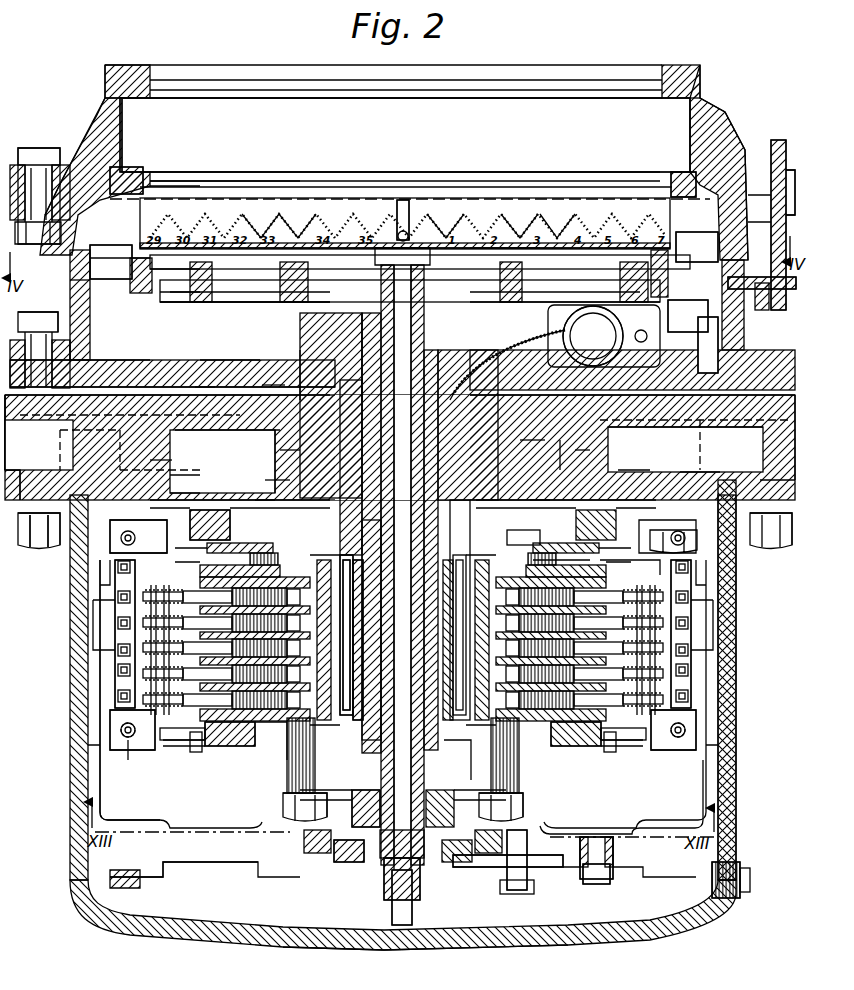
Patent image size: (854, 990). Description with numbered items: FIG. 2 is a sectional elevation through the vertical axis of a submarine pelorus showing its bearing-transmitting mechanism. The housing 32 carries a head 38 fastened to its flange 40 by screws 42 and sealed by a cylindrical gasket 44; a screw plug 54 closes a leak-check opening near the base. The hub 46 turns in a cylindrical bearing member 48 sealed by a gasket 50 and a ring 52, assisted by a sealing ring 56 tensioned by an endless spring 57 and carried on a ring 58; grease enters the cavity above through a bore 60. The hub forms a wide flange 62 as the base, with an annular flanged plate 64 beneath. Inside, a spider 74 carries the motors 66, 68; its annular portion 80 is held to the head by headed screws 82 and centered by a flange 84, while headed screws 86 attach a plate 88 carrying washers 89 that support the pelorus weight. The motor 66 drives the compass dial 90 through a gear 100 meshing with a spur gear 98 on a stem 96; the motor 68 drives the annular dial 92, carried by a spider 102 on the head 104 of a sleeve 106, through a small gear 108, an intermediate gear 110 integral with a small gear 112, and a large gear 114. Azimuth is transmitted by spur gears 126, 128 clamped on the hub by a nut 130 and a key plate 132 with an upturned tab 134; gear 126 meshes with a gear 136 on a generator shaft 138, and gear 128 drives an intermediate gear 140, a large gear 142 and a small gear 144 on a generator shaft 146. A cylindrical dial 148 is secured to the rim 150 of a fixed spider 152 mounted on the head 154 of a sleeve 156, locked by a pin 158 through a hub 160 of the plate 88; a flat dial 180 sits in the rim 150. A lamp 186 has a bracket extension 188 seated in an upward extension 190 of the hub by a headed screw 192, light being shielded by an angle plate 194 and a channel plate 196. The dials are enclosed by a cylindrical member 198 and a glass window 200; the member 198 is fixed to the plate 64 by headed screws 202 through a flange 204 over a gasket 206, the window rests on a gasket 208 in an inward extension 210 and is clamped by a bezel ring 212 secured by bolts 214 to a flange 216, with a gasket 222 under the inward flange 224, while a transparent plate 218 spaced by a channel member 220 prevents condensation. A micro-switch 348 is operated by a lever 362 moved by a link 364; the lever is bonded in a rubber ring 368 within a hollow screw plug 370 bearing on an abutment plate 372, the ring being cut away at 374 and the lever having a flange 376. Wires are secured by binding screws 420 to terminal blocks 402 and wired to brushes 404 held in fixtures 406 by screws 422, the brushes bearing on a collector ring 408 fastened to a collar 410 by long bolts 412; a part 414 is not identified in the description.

The housing 32 is at (500, 948).
The head 38 is at (152, 385).
The outwardly extending flange 40 is at (22, 548).
The screws 42 is at (48, 548).
The cylindrical gasket 44 is at (80, 500).
The hub 46 is at (300, 352).
The cylindrical member 48 is at (292, 456).
The gasket 50 is at (540, 450).
The ring 52 is at (578, 442).
The screw plug 54 is at (745, 879).
The sealing ring 56 is at (275, 448).
The endless tension spring 57 is at (250, 432).
The complementally shaped ring 58 is at (585, 453).
The bore 60 is at (205, 385).
The wide flange 62 is at (226, 368).
The annular flanged plate 64 is at (270, 385).
The motor 66 is at (165, 690).
The motor 68 is at (621, 797).
The spider 74 is at (135, 760).
The annular portion 80 is at (130, 485).
The headed screw 82 is at (158, 458).
The upwardly extending flange 84 is at (185, 474).
The headed screws 86 is at (302, 820).
The plate 88 is at (262, 780).
The washers 89 is at (455, 762).
The compass dial 90 is at (300, 248).
The annular dial 92 is at (210, 247).
The stem 96 is at (416, 242).
The spur gear 98 is at (428, 892).
The gear 100 is at (175, 884).
The spider 102 is at (262, 248).
The head of sleeve 104 is at (346, 248).
The sleeve 106 is at (455, 248).
The small gear 108 is at (616, 855).
The large intermediate gear 110 is at (592, 884).
The small gear 112 is at (530, 885).
The large gear 114 is at (486, 870).
The spur gear 126 is at (500, 512).
The spur gear 128 is at (272, 482).
The clamping nut 130 is at (352, 543).
The annular plate 132 is at (360, 531).
The upturned tab 134 is at (242, 540).
The gear 136 is at (118, 557).
The shaft 138 is at (188, 482).
The small intermediate gear 140 is at (630, 466).
The large gear 142 is at (536, 548).
The small gear 144 is at (650, 562).
The shaft 146 is at (660, 576).
The cylindrical dial 148 is at (566, 215).
The flange 150 is at (158, 291).
The fixed spider 152 is at (184, 300).
The head of sleeve 154 is at (264, 305).
The sleeve 156 is at (378, 375).
The pin 158 is at (360, 845).
The downwardly projecting hub 160 is at (358, 800).
The annular plate 180 is at (150, 269).
The lamp 186 is at (593, 336).
The reduced extension 188 is at (575, 345).
The upward extension 190 is at (503, 250).
The headed screw 192 is at (522, 248).
The circular angle plate 194 is at (111, 262).
The circular channel plate 196 is at (90, 262).
The cylindrical member 198 is at (90, 286).
The glass window 200 is at (405, 135).
The headed screws 202 is at (36, 316).
The flange 204 is at (78, 346).
The resilient cylindrical gasket 206 is at (60, 358).
The resilient gasket 208 is at (676, 175).
The inward extension 210 is at (165, 200).
The bezel ring 212 is at (112, 128).
The bolts 214 is at (38, 148).
The outwardly extending flange 216 is at (68, 158).
The transparent plate 218 is at (252, 178).
The resilient circular channel member 220 is at (122, 208).
The gasket 222 is at (150, 96).
The inwardly extending flange 224 is at (145, 68).
The micro-switch 348 is at (672, 313).
The switch operating lever 362 is at (690, 474).
The link 364 is at (782, 145).
The resilient rubber ring 368 is at (760, 320).
The hollow screw plug 370 is at (757, 250).
The annular abutment plate 372 is at (726, 250).
The cut away 374 is at (716, 392).
The peripheral flange 376 is at (697, 247).
The terminal blocks 402 is at (116, 690).
The brushes 404 is at (200, 746).
The fixtures 406 is at (232, 748).
The collector ring 408 is at (505, 562).
The collar 410 is at (340, 578).
The long bolt 412 is at (340, 556).
The cover side wall 414 is at (100, 95).
The binding screws 420 is at (118, 665).
The screws 422 is at (260, 500).